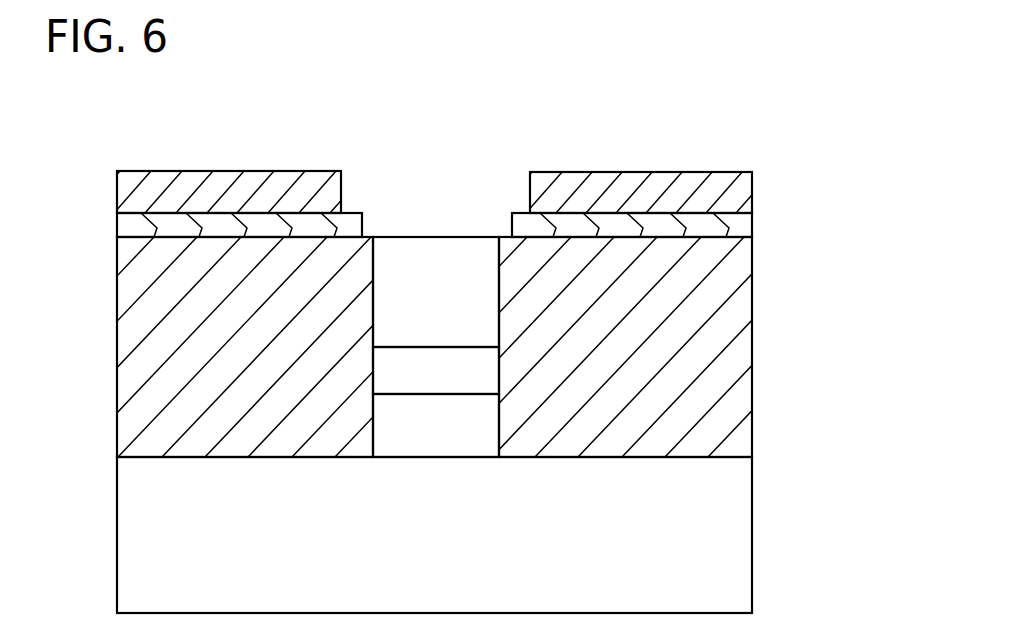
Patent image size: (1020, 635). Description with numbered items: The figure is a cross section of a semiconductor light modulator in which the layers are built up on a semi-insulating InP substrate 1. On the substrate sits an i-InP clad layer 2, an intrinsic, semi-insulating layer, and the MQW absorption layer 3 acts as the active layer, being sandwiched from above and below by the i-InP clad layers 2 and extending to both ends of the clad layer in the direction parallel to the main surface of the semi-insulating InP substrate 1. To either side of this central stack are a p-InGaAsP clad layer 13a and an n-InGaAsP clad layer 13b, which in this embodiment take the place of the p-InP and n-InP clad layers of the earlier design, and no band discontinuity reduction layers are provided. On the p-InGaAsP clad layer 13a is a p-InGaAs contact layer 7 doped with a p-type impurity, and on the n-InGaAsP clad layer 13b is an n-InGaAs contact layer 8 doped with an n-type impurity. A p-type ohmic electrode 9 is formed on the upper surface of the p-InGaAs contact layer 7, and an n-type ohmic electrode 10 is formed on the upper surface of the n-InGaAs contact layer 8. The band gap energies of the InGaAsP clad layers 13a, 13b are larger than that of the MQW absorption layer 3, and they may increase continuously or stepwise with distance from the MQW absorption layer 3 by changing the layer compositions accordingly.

The semi-insulating InP substrate 1 is at (680, 536).
The i-InP clad layer 2 is at (462, 291).
The MQW absorption layer 3 is at (462, 371).
The p-InGaAs contact layer 7 is at (730, 227).
The n-InGaAs contact layer 8 is at (140, 225).
The p-type ohmic electrode 9 is at (722, 200).
The n-type ohmic electrode 10 is at (148, 194).
The p-InGaAsP clad layer 13a is at (702, 318).
The n-InGaAsP clad layer 13b is at (163, 337).